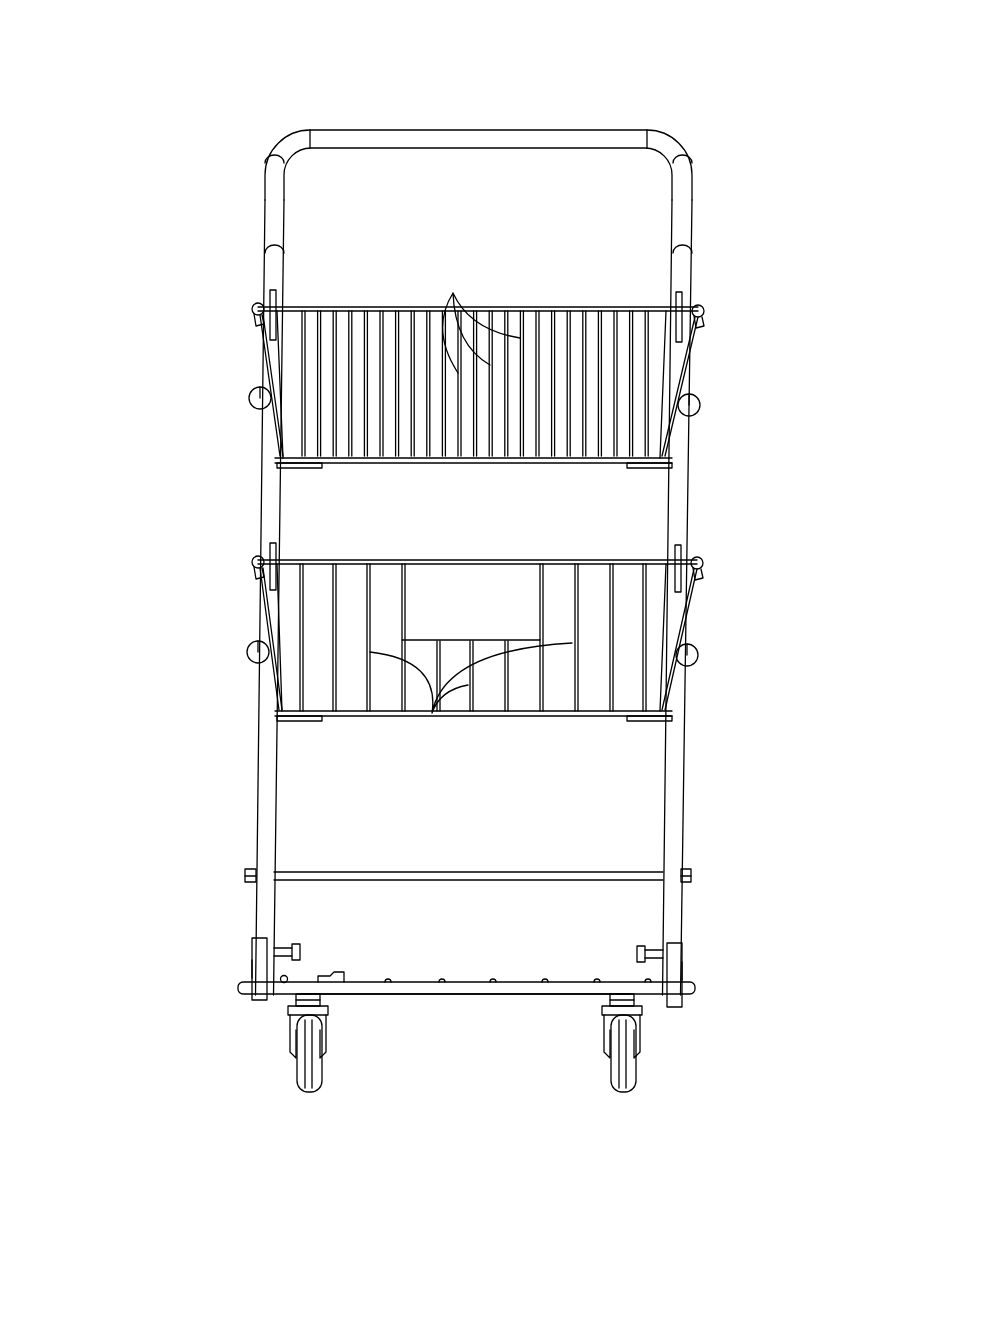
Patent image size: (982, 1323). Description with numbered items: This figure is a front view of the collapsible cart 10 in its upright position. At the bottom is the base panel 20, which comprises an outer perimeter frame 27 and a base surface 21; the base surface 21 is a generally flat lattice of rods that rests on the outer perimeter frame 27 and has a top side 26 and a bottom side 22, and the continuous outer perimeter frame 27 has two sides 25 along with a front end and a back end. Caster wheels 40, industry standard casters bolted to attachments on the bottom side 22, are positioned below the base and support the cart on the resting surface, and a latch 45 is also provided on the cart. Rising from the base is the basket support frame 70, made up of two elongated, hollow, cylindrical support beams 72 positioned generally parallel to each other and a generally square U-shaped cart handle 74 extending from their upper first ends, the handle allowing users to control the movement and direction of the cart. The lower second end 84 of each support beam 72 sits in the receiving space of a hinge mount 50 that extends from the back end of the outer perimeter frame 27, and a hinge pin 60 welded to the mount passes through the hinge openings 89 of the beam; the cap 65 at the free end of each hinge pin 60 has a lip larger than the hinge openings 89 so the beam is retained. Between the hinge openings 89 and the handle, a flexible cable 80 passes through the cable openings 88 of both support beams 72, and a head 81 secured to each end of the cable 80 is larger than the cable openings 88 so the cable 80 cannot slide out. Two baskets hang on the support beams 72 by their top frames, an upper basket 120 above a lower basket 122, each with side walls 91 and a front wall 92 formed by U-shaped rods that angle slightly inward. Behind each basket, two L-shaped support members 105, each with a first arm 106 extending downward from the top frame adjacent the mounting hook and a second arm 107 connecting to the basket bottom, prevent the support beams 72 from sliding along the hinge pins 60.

The collapsible cart 10 is at (148, 42).
The base panel 20 is at (222, 1003).
The base surface 21 is at (438, 980).
The bottom side 22 is at (490, 996).
The sides 25 is at (240, 990).
The top side 26 is at (505, 980).
The outer perimeter frame 27 is at (468, 985).
The caster wheels 40 is at (320, 1050).
The latch 45 is at (340, 975).
The hinge mounts 50 is at (250, 945).
The hinge pins 60 is at (305, 947).
The cap 65 is at (302, 955).
The basket support frame 70 is at (232, 140).
The support beams 72 is at (270, 517).
The cart handle 74 is at (488, 130).
The cable 80 is at (455, 872).
The head 81 is at (240, 877).
The second end 84 is at (236, 950).
The cable openings 88 is at (248, 870).
The hinge openings 89 is at (272, 958).
The side walls 91 is at (262, 686).
The front wall 92 is at (385, 688).
The support members 105 is at (278, 460).
The first arm 106 is at (280, 432).
The second arm 107 is at (313, 465).
The upper basket 120 is at (262, 340).
The lower basket 122 is at (262, 580).